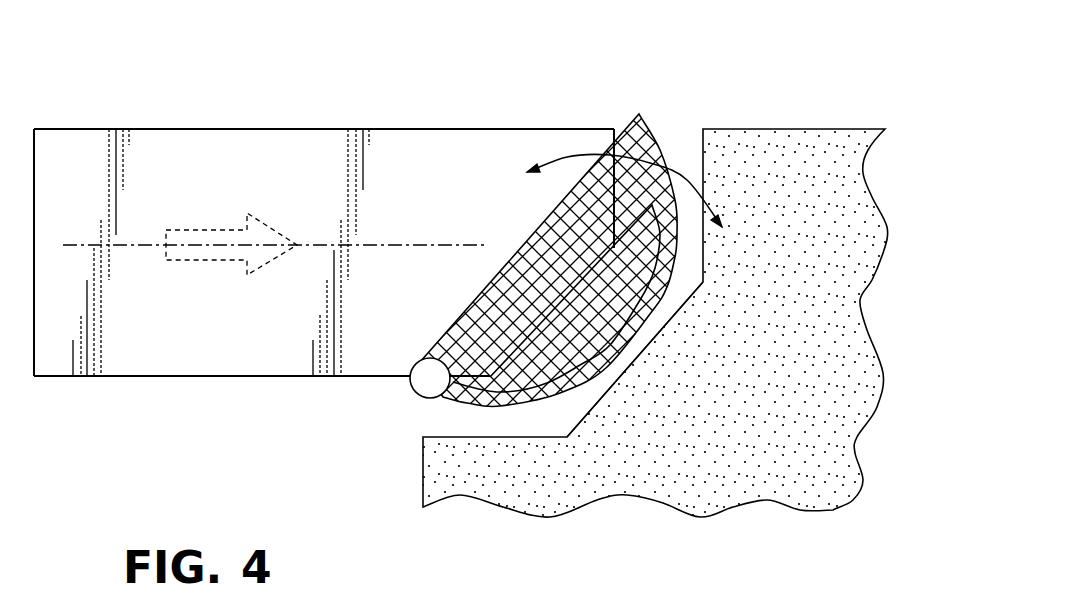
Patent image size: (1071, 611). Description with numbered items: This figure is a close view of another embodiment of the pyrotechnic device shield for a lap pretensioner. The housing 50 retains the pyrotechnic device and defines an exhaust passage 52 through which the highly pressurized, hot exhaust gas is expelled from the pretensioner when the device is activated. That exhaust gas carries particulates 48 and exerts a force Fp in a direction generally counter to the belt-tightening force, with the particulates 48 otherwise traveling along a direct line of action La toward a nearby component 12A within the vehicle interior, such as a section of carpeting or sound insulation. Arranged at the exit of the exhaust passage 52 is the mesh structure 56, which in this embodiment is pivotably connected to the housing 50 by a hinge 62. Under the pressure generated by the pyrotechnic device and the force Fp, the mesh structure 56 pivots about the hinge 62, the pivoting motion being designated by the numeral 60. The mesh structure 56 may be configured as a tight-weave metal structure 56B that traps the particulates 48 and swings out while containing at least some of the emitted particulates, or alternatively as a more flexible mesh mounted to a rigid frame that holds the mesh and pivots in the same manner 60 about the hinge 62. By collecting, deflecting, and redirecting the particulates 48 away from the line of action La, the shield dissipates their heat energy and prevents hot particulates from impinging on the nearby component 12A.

The nearby component 12A is at (836, 460).
The mesh structure 56 is at (676, 287).
The tight-weave metal structure 56B is at (608, 372).
The exhaust passage 52 is at (631, 130).
The pivot 60 is at (682, 183).
The housing 50 is at (182, 163).
The direct line of action La is at (415, 250).
The particulates 48 is at (187, 262).
The force Fp is at (215, 263).
The hinge 62 is at (426, 396).